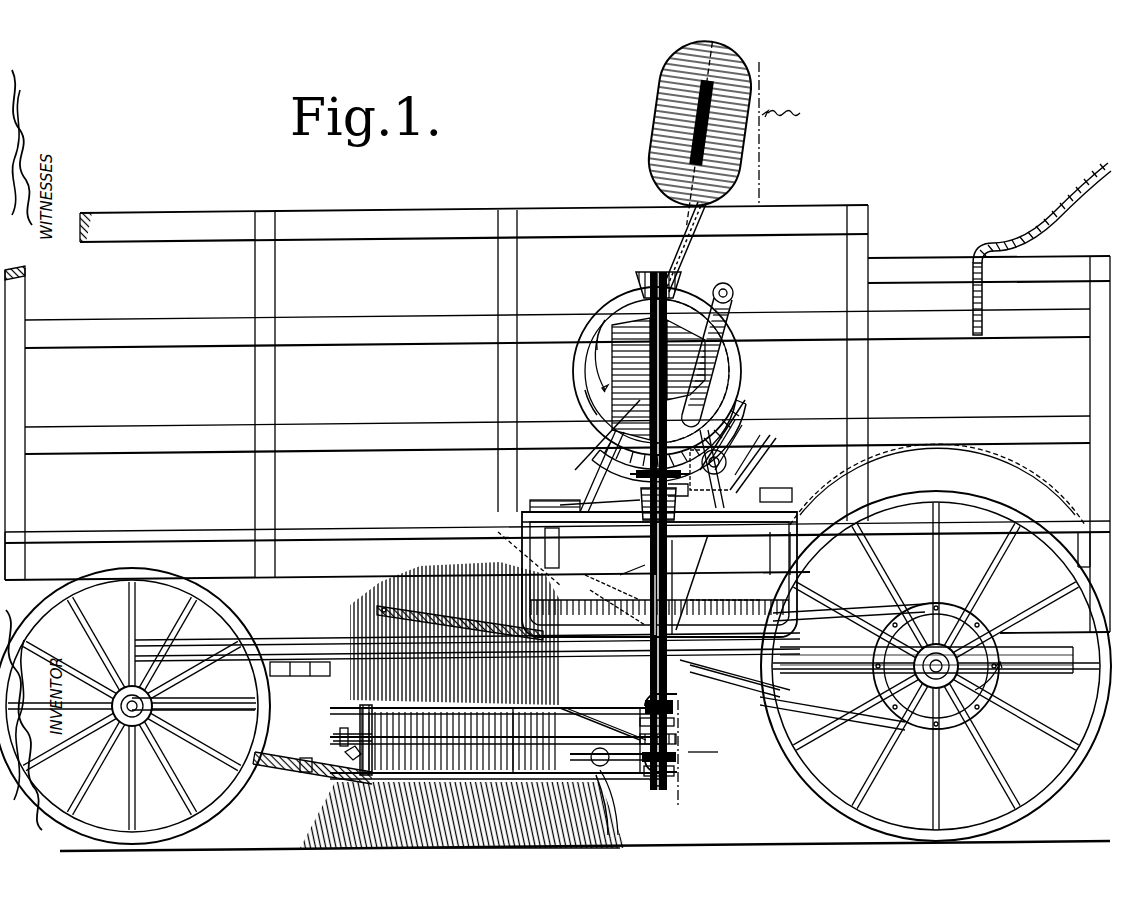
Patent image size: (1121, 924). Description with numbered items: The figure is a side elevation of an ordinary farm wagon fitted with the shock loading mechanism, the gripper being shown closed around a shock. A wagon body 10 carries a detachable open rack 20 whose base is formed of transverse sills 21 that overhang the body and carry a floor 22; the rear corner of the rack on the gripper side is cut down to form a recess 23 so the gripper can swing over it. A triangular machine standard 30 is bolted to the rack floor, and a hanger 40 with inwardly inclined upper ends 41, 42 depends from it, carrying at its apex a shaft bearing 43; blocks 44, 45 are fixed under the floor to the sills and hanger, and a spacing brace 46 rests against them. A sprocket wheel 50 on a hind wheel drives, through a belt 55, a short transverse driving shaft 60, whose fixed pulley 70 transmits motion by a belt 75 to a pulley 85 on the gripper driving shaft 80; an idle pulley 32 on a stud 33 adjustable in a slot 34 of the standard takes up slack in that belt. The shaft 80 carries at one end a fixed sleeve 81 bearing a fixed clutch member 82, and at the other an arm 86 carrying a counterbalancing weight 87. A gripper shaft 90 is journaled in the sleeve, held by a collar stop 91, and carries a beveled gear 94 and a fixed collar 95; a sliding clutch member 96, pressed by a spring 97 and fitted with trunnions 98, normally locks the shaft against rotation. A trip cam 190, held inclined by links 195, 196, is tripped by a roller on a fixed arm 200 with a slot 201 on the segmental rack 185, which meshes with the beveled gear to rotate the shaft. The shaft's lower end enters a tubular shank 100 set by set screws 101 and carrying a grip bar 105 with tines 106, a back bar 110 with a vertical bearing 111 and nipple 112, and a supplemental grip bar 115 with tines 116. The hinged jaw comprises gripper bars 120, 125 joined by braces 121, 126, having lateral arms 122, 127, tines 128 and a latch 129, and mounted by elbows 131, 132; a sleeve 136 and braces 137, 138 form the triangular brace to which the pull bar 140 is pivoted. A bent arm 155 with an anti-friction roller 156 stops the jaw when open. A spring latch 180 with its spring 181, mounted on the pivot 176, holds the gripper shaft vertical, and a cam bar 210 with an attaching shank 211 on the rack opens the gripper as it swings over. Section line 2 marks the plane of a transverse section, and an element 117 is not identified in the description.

The section line 2 is at (735, 433).
The wagon body 10 is at (300, 585).
The open rack 20 is at (557, 329).
The transverse sills 21 is at (22, 560).
The floor 22 is at (295, 530).
The recess 23 is at (989, 426).
The machine standard 30 is at (770, 435).
The idle pulley 32 is at (760, 435).
The stud 33 is at (735, 420).
The slot 34 is at (742, 425).
The hanger 40 is at (520, 570).
The inclined upper end 41 is at (540, 500).
The inclined upper end 42 is at (768, 492).
The shaft bearing 43 is at (704, 615).
The block 44 is at (500, 535).
The block 45 is at (858, 500).
The spacing brace 46 is at (598, 622).
The sprocket wheel 50 is at (882, 720).
The belt 55 is at (808, 706).
The driving shaft 60 is at (640, 715).
The fixed pulley 70 is at (672, 700).
The belt 75 is at (690, 490).
The gripper driving shaft 80 is at (657, 371).
The fixed sleeve 81 is at (600, 377).
The fixed clutch member 82 is at (669, 441).
The pulley 85 is at (585, 402).
The arm 86 is at (683, 246).
The weight 87 is at (666, 125).
The gripper shaft 90 is at (652, 272).
The collar stop 91 is at (605, 330).
The beveled gear 94 is at (636, 284).
The fixed collar 95 is at (645, 503).
The sliding clutch member 96 is at (578, 462).
The spring 97 is at (600, 508).
The trunnions 98 is at (562, 454).
The tubular shank 100 is at (651, 587).
The set screws 101 is at (700, 630).
The grip bar 105 is at (340, 738).
The tines 106 is at (345, 737).
The back bar 110 is at (685, 741).
The vertical bearing 111 is at (680, 730).
The nipple 112 is at (690, 722).
The supplemental grip bar 115 is at (330, 772).
The tines 116 is at (345, 757).
The bar 117 is at (735, 675).
The gripper bar 120 is at (360, 712).
The brace 121 is at (345, 721).
The lateral arm 122 is at (241, 684).
The gripper bar 125 is at (345, 800).
The brace 126 is at (462, 815).
The lateral arm 127 is at (258, 752).
The tines 128 is at (480, 818).
The gripper latch 129 is at (283, 768).
The elbow 131 is at (622, 726).
The elbow 132 is at (660, 780).
The sleeve 136 is at (718, 751).
The brace 137 is at (580, 702).
The brace 138 is at (604, 808).
The pull bar 140 is at (608, 830).
The bent arm 155 is at (676, 757).
The anti-friction roller 156 is at (674, 775).
The pivot 176 is at (620, 575).
The spring latch 180 is at (640, 600).
The spring 181 is at (640, 612).
The segmental rack 185 is at (743, 399).
The trip cam 190 is at (640, 478).
The link 195 is at (705, 500).
The link 196 is at (608, 490).
The fixed arm 200 is at (728, 335).
The slot 201 is at (733, 293).
The cam bar 210 is at (1066, 205).
The attaching shank 211 is at (973, 296).